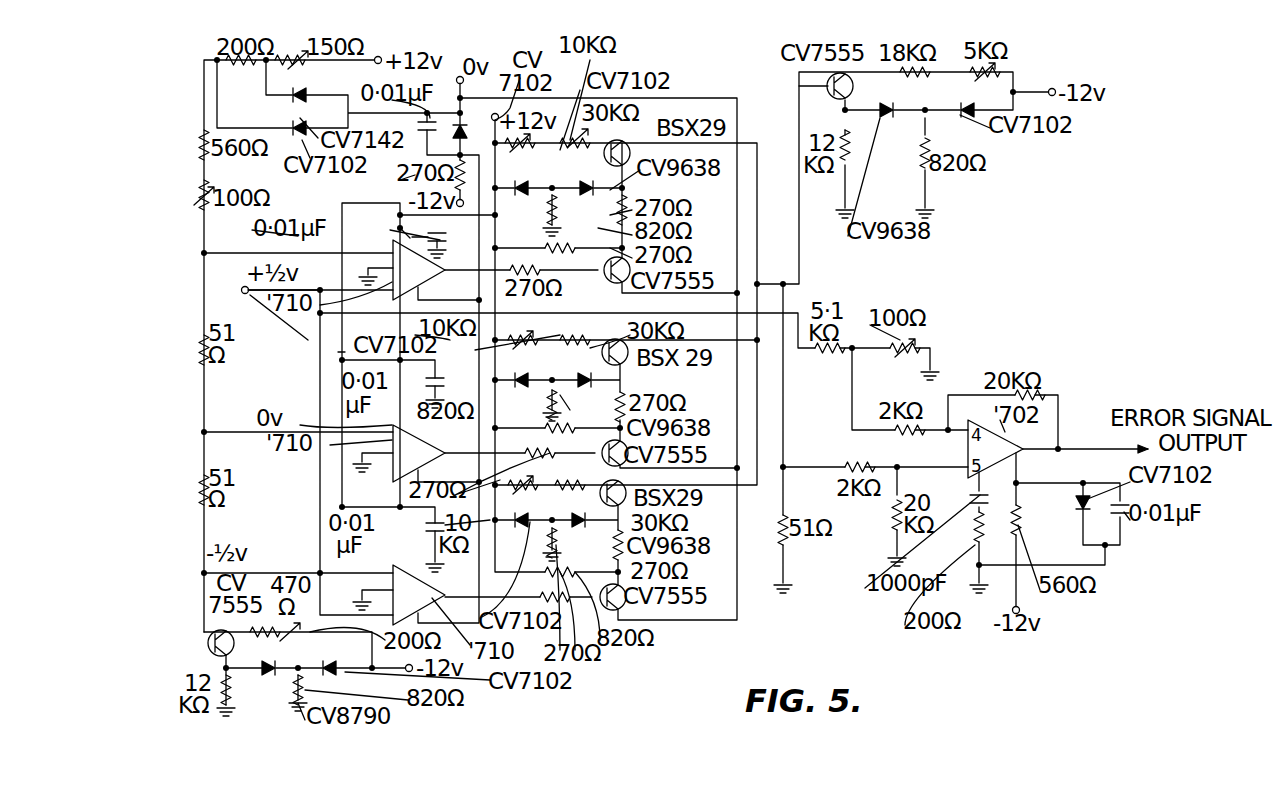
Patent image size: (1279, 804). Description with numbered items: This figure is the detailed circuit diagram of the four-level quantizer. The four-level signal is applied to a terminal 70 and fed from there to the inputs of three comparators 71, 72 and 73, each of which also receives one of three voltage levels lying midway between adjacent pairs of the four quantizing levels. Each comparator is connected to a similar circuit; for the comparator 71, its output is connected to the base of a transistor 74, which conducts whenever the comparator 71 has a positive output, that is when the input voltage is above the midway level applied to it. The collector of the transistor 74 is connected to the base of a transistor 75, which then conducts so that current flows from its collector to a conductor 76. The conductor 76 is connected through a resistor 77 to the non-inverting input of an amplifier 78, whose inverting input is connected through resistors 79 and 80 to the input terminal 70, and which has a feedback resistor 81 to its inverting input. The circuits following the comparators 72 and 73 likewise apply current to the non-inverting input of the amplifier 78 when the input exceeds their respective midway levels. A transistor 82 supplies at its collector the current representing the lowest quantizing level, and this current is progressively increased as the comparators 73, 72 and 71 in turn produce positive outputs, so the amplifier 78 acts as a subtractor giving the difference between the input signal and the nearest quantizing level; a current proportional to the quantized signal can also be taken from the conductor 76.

The input terminal 70 is at (250, 298).
The comparator 71 is at (433, 281).
The comparator 72 is at (392, 470).
The comparator 73 is at (430, 588).
The transistor 74 is at (608, 282).
The transistor 75 is at (604, 158).
The conductor 76 is at (783, 281).
The resistor 77 is at (855, 467).
The amplifier 78 is at (1022, 449).
The resistor 79 is at (903, 432).
The resistor 80 is at (830, 352).
The feedback resistor 81 is at (1038, 398).
The transistor 82 is at (799, 86).